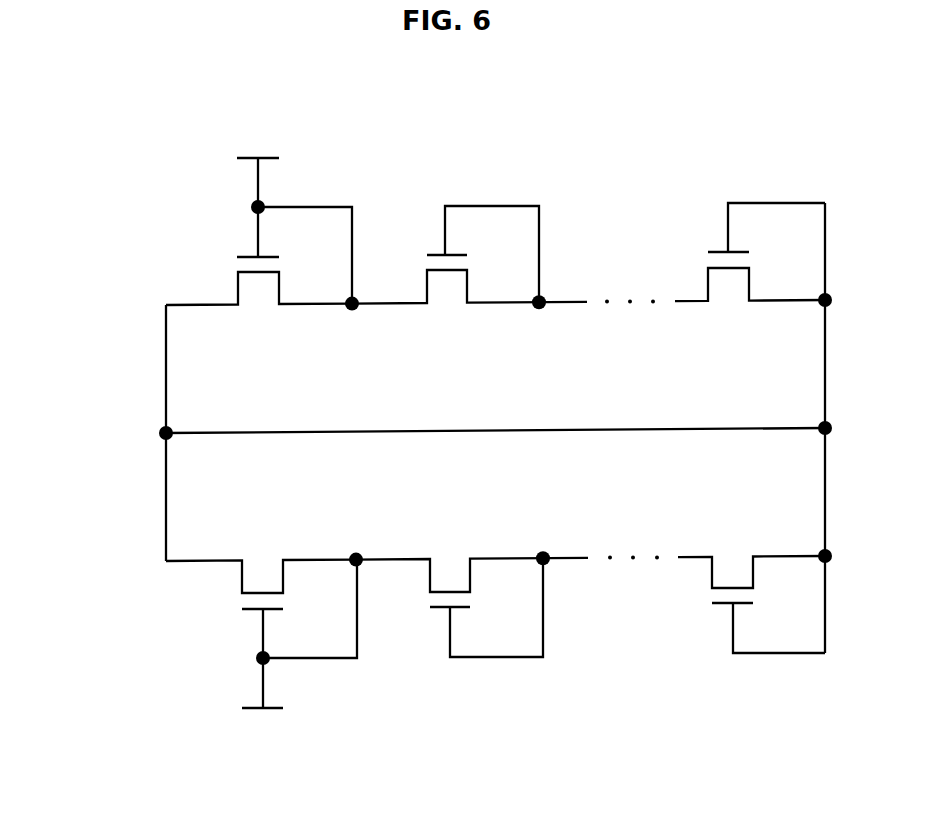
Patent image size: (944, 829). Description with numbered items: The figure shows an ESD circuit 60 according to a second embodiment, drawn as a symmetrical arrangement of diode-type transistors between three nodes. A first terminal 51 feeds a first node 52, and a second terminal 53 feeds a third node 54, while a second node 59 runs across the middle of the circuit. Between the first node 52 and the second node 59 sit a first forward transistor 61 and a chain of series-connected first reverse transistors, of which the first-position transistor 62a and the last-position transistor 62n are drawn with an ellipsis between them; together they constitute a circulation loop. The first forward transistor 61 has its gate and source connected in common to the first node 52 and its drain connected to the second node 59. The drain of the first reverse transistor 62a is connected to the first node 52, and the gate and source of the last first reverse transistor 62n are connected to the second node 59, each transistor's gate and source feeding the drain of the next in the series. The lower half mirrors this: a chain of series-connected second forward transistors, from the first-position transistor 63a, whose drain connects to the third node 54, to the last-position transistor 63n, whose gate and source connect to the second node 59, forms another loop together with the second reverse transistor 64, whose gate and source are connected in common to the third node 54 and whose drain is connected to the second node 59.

The ESD circuit 60 is at (46, 137).
The second node 59 is at (166, 433).
The first forward transistor 61 is at (212, 250).
The first terminal 51 is at (258, 157).
The first node 52 is at (354, 302).
The first reverse transistor 62a is at (515, 175).
The first reverse transistor 62n is at (798, 174).
The second reverse transistor 64 is at (215, 618).
The second terminal 53 is at (263, 712).
The third node 54 is at (360, 564).
The second forward transistor 63a is at (518, 686).
The second forward transistor 63n is at (803, 681).